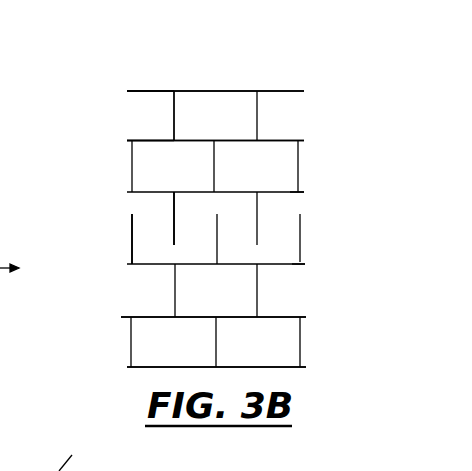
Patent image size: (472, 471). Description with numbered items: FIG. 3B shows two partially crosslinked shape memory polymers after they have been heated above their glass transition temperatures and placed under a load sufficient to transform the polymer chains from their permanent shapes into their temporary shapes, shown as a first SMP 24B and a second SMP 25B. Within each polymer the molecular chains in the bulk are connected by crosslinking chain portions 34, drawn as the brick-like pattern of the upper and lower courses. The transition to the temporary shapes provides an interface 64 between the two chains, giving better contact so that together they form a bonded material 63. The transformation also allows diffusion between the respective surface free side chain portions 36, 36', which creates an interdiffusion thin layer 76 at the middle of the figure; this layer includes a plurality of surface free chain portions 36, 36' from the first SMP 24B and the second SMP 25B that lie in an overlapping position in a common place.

The bonded material 63 is at (201, 71).
The crosslinking chain portion 34 is at (171, 114).
The free side chain portion 36 is at (188, 218).
The surface free chain portion 36' is at (113, 253).
The interdiffusion thin layer 76 is at (110, 216).
The interface 64 is at (290, 192).
The temporary shape of first partially crosslinked SMP 24B is at (84, 139).
The temporary shape of second partially crosslinked SMP 25B is at (78, 313).